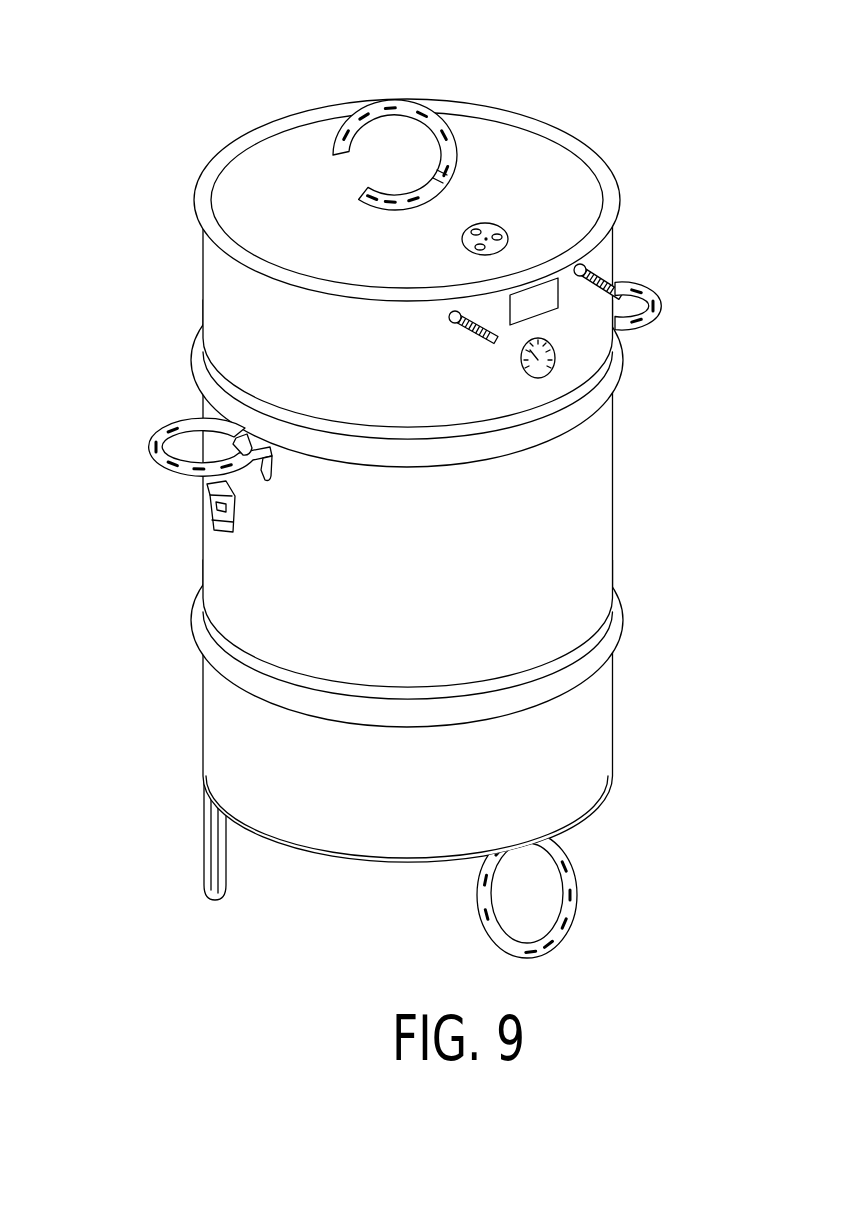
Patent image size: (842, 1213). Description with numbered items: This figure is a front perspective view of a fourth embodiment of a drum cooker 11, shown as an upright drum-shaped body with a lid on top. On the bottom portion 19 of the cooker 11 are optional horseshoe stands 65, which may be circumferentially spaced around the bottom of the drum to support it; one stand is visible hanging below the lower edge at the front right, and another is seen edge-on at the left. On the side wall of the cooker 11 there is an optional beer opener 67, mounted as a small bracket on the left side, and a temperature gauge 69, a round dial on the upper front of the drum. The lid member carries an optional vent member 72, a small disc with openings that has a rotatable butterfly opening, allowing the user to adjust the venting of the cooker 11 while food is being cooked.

The cooker 11 is at (452, 458).
The bottom portion 19 is at (610, 790).
The horseshoe stand 65 is at (553, 932).
The beer opener 67 is at (213, 519).
The temperature gauge 69 is at (556, 365).
The vent member 72 is at (462, 240).